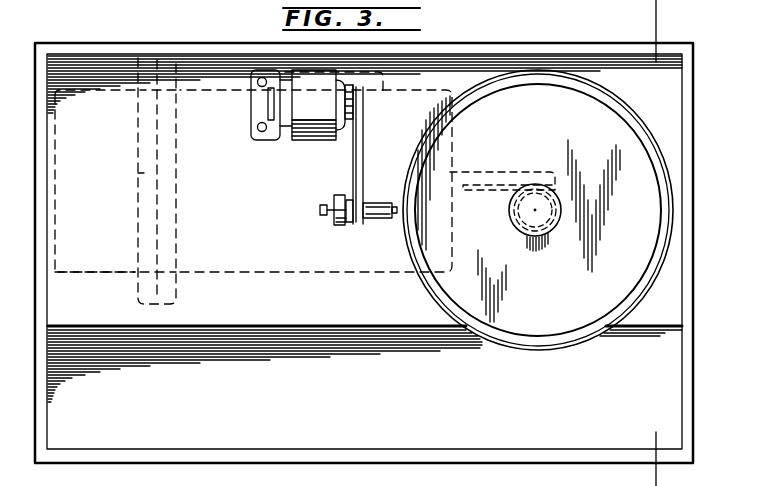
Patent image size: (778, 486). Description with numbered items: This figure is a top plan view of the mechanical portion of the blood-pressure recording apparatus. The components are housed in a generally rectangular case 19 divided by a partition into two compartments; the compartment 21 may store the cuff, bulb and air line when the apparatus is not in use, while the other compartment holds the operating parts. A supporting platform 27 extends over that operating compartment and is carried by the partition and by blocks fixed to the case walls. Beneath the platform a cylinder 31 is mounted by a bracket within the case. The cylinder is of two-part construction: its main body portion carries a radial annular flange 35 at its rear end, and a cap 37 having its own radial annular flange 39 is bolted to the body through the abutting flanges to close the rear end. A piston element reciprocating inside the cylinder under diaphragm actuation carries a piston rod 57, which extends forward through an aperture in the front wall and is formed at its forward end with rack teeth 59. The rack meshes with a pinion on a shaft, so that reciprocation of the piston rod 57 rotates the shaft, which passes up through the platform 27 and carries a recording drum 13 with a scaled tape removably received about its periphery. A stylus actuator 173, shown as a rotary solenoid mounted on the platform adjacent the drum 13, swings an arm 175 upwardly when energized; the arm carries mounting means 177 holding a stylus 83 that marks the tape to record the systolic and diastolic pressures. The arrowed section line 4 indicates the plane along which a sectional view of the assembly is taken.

The section line 4- 4 is at (632, 23).
The recording drum 13 is at (640, 238).
The case 19 is at (687, 70).
The compartment 21 is at (665, 393).
The supporting platform 27 is at (668, 118).
The cylinder 31 is at (300, 275).
The radial annular flange 35 is at (178, 232).
The cap 37 is at (107, 274).
The radial annular flange 39 is at (138, 174).
The piston rod 57 is at (462, 172).
The rack teeth 59 is at (478, 190).
The stylus 83 is at (395, 204).
The stylus actuator 173 is at (300, 143).
The arm 175 is at (358, 154).
The mounting means 177 is at (363, 230).